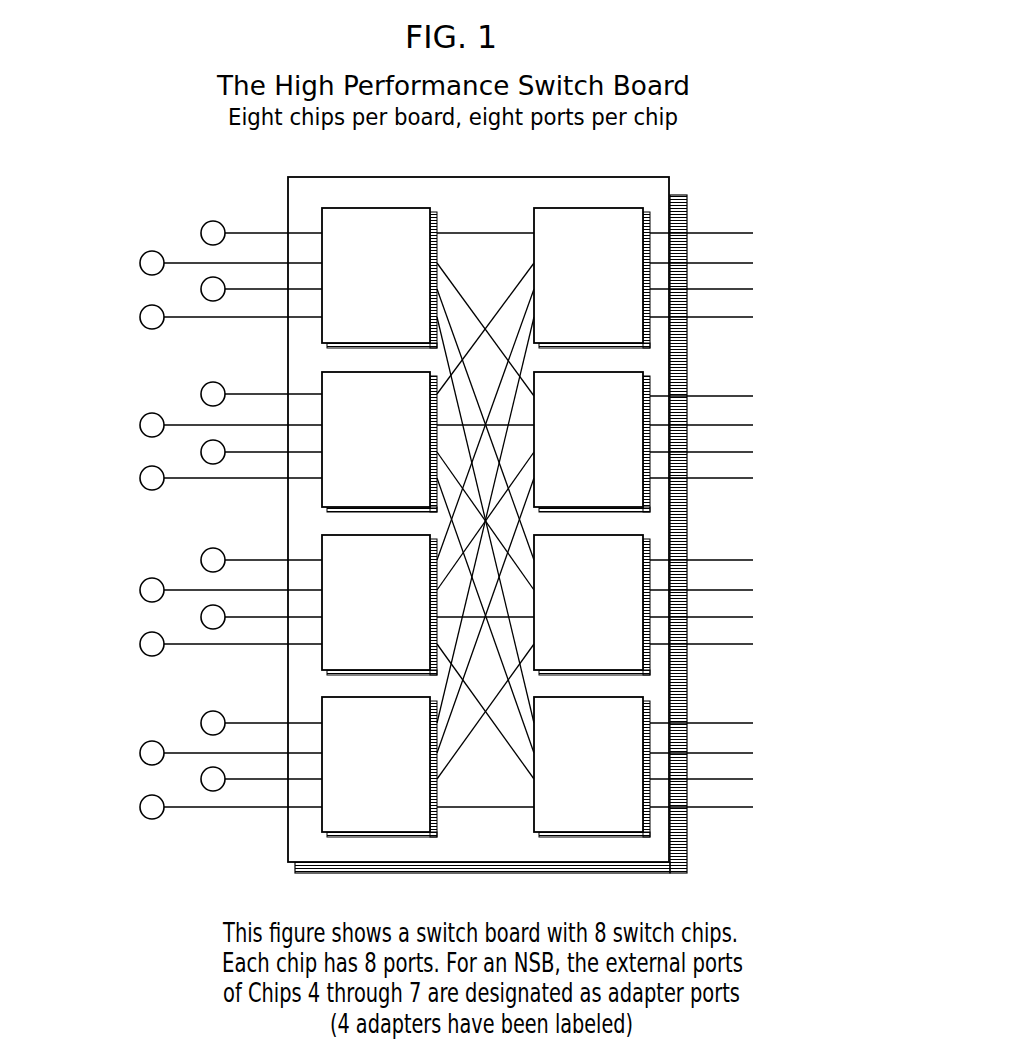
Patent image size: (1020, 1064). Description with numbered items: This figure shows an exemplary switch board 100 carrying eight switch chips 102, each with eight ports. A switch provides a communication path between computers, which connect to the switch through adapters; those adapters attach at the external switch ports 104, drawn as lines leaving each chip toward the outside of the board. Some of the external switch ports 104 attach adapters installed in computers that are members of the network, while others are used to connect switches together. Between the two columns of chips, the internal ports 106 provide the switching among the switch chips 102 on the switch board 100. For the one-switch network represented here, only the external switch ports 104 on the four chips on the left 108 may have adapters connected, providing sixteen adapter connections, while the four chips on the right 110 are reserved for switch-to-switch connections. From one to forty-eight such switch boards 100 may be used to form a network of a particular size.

The switch board 100 is at (573, 177).
The switch chip 102 is at (372, 208).
The external switch port 104 is at (108, 328).
The internal ports 106 is at (528, 877).
The four chips on the left 108 is at (433, 877).
The four chips on the right 110 is at (645, 877).